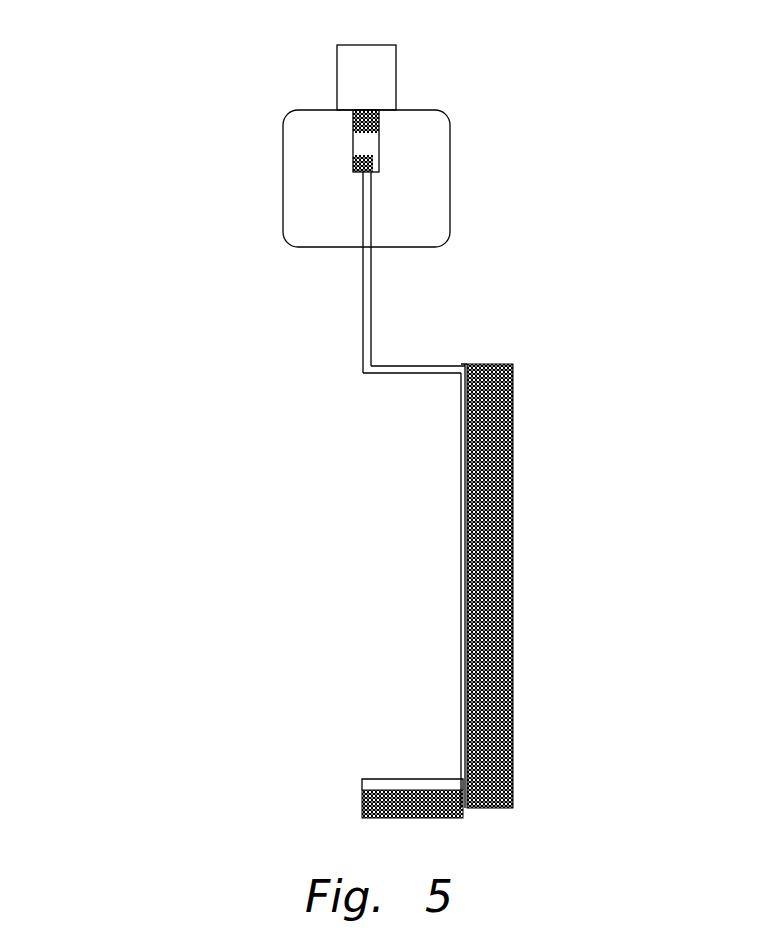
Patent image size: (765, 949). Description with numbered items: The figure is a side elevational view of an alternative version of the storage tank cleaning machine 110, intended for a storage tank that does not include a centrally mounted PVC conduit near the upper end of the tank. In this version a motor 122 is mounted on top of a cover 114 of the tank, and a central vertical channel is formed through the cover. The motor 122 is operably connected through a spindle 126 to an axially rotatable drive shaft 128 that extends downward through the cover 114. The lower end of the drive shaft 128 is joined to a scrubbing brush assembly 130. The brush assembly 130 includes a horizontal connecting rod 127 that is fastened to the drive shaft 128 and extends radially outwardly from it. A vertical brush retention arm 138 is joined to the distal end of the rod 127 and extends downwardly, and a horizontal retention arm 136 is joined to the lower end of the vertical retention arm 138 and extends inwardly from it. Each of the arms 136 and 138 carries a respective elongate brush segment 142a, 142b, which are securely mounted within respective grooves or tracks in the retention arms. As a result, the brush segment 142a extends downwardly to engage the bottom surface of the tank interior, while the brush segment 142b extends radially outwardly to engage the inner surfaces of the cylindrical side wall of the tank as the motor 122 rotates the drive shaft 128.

The tank cleaning machine 110 is at (238, 134).
The motor 122 is at (397, 52).
The cover 114 is at (450, 198).
The spindle 126 is at (379, 143).
The drive shaft 128 is at (362, 273).
The horizontal connecting rod 127 is at (397, 373).
The scrubbing brush assembly 130 is at (461, 363).
The vertical brush retention arm 138 is at (461, 525).
The elongate brush segment 142b is at (512, 523).
The horizontal retention arm 136 is at (397, 797).
The elongate brush segment 142a is at (422, 817).